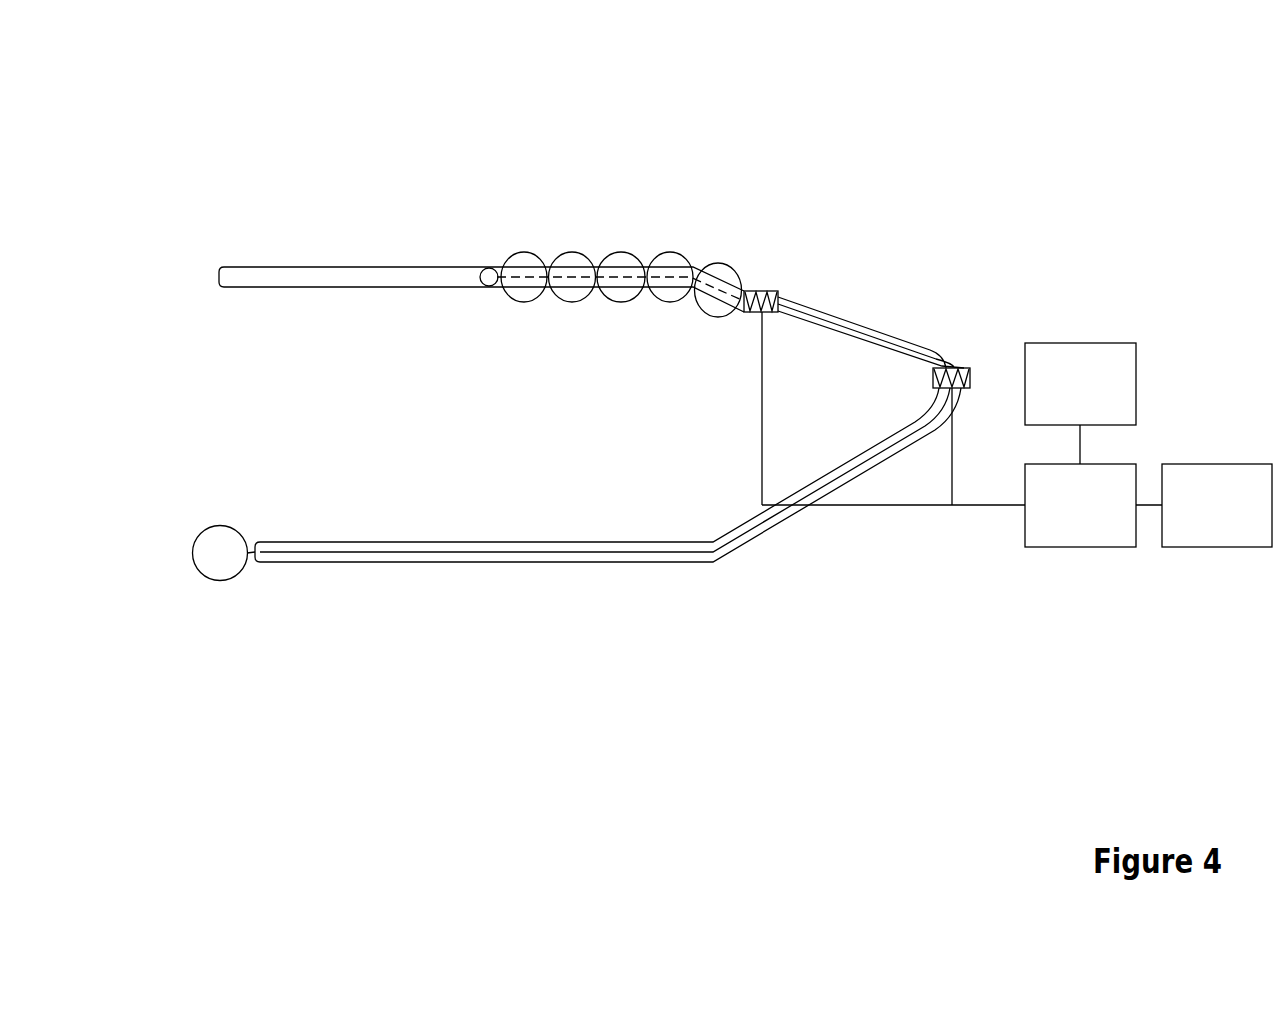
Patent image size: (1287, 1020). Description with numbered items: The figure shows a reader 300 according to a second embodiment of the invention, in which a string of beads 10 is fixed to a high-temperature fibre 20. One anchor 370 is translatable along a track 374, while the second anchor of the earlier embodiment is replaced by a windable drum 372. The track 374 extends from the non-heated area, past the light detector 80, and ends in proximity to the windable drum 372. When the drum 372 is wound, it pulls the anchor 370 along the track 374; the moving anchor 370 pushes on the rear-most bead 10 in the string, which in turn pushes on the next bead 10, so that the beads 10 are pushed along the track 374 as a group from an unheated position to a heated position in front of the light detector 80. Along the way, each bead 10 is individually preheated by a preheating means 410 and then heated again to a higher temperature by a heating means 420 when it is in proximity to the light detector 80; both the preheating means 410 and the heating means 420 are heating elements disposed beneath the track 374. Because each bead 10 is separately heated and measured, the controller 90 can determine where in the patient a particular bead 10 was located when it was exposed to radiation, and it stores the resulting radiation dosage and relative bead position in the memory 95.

The reader 300 is at (297, 105).
The track 374 is at (282, 267).
The anchor 370 is at (486, 268).
The bead 10 is at (537, 251).
The preheating means 410 is at (776, 290).
The heating means 420 is at (968, 368).
The high-temperature fibre 20 is at (350, 562).
The windable drum 372 is at (193, 553).
The light detector 80 is at (1085, 343).
The controller 90 is at (1080, 548).
The memory 95 is at (1218, 548).